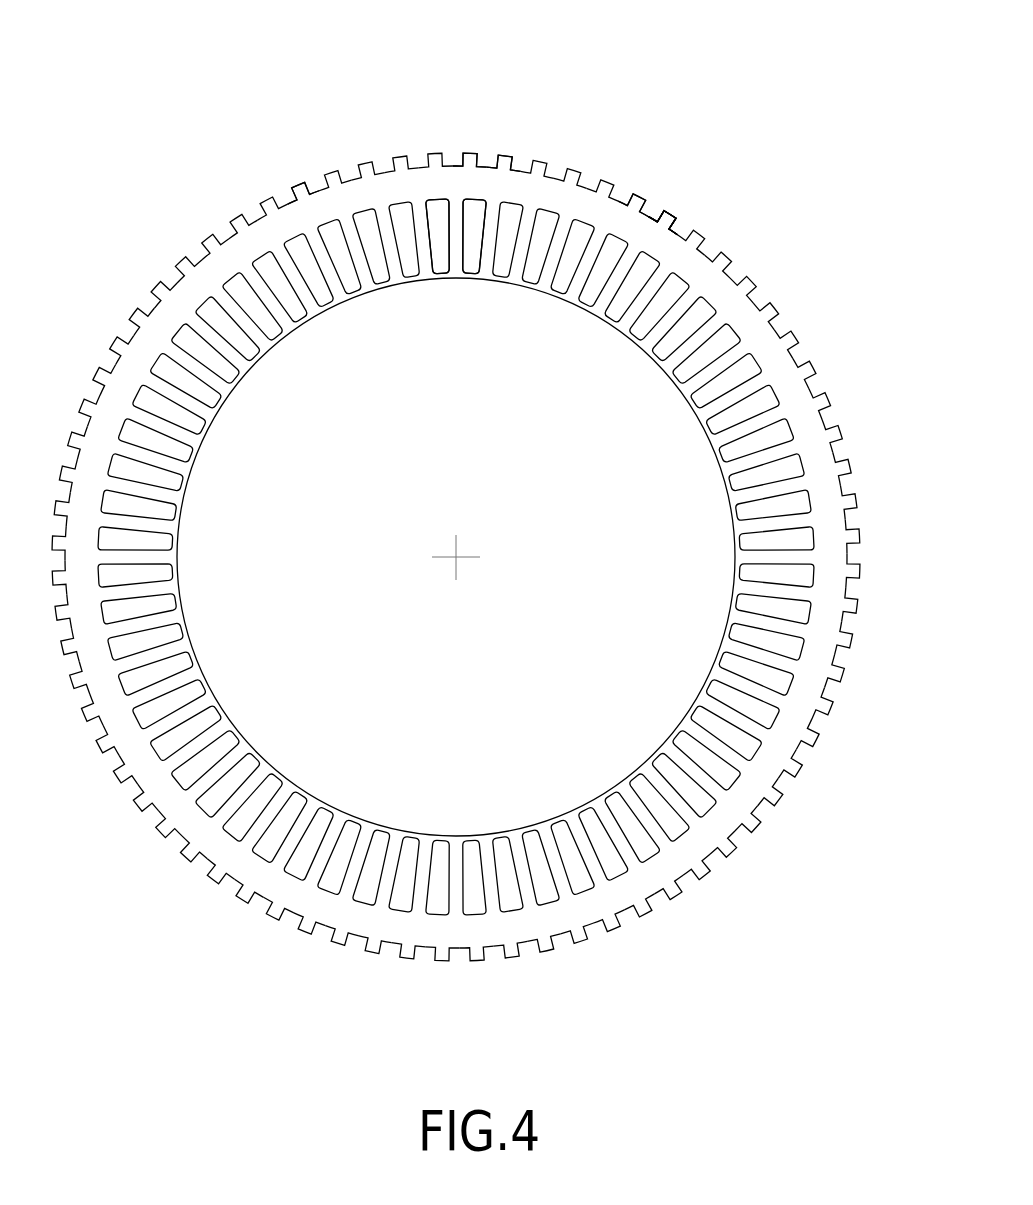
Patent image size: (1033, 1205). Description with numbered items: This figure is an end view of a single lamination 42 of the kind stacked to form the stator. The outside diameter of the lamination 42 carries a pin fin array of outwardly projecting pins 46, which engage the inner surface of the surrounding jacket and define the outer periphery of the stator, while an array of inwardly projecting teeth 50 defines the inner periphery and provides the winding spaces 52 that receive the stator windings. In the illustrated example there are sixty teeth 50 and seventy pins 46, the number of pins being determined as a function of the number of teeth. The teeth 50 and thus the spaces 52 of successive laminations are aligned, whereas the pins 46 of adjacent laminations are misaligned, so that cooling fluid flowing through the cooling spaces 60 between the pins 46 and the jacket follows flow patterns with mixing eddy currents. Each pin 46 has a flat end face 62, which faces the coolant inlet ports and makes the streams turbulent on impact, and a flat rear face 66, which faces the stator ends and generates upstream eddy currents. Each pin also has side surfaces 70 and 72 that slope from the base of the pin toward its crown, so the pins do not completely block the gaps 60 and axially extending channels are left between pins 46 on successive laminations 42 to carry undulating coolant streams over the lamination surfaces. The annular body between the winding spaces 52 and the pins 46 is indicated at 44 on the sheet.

The lamination 42 is at (716, 86).
The yoke 44 is at (262, 240).
The pins 46 is at (302, 192).
The teeth 50 is at (458, 218).
The winding spaces 52 is at (430, 212).
The cooling spaces 60 is at (487, 163).
The flat end face 62 is at (175, 270).
The flat rear face 66 is at (672, 222).
The side surface 70 is at (682, 228).
The side surface 72 is at (672, 220).